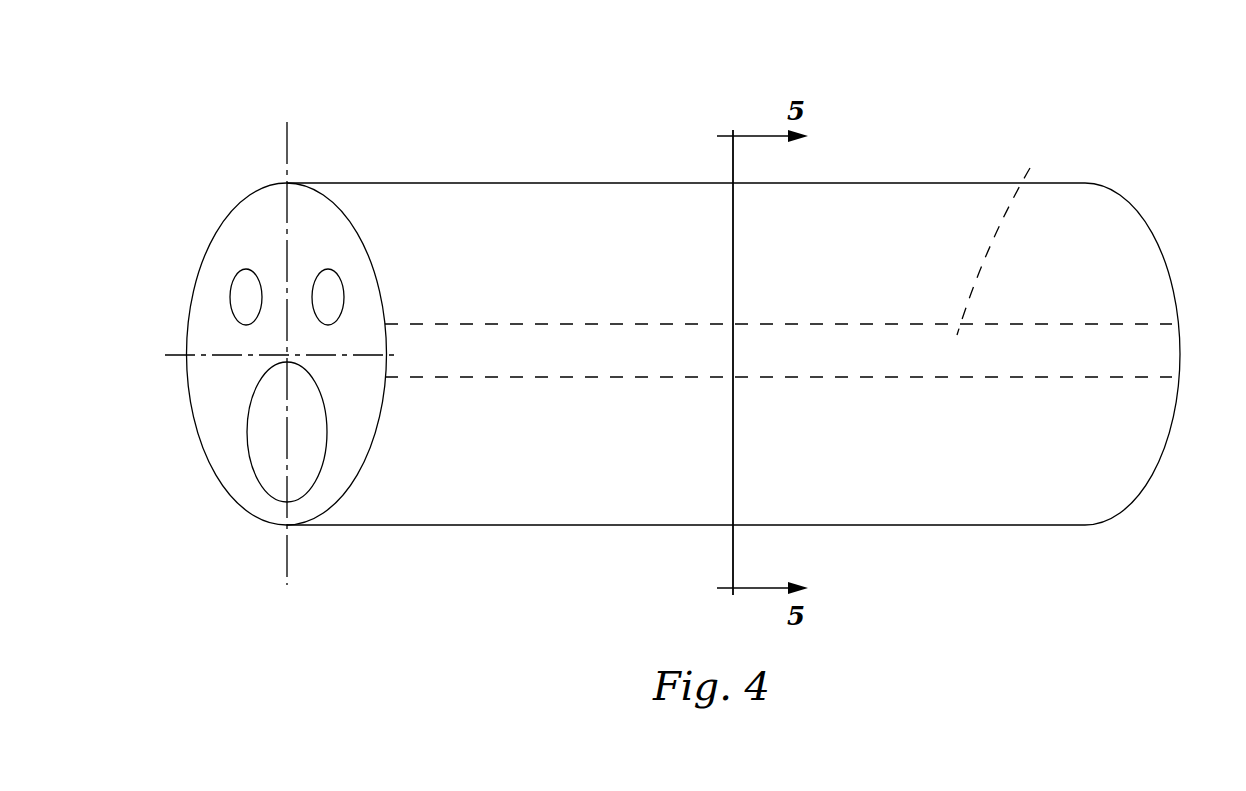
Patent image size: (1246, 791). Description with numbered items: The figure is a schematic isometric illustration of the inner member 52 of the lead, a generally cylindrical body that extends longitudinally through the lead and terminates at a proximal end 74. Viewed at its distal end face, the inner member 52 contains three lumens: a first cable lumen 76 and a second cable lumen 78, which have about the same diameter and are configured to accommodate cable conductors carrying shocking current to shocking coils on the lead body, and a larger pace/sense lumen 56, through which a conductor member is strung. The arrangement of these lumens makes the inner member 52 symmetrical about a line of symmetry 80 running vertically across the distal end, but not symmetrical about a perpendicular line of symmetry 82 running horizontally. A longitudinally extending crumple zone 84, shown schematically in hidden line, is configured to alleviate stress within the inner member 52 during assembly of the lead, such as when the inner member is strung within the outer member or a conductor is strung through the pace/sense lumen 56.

The inner member 52 is at (682, 313).
The pace/sense lumen 56 is at (273, 472).
The proximal end 74 is at (1165, 260).
The first cable lumen 76 is at (238, 290).
The second cable lumen 78 is at (340, 290).
The line of symmetry 80 is at (287, 145).
The perpendicular line of symmetry 82 is at (175, 355).
The crumple zone 84 is at (1001, 234).